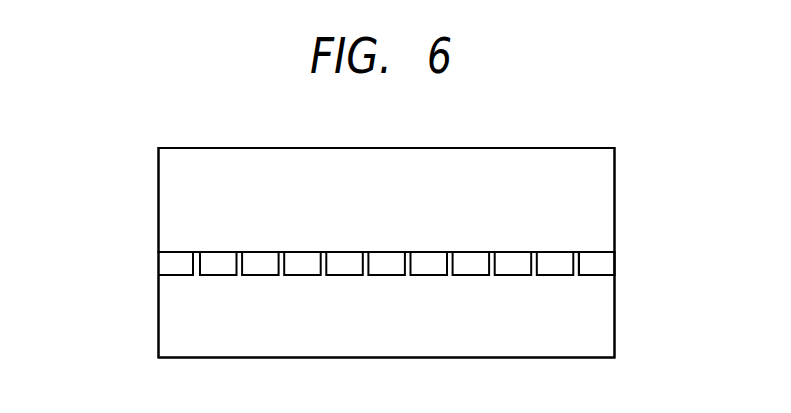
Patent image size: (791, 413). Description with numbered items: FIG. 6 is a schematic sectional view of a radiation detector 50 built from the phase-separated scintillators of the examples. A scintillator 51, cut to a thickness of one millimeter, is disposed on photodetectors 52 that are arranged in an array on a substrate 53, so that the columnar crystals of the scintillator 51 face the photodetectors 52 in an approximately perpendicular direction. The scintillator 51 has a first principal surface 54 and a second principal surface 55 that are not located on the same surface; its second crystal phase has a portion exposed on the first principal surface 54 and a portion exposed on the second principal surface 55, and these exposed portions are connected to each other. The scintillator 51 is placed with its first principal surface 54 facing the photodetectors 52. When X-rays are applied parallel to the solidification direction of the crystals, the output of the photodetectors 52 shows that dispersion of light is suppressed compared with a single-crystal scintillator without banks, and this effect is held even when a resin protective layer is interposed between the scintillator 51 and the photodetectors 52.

The radiation detector 50 is at (238, 130).
The scintillator 51 is at (168, 200).
The photodetectors 52 is at (211, 262).
The substrate 53 is at (165, 323).
The first principal surface 54 is at (597, 253).
The second principal surface 55 is at (575, 147).